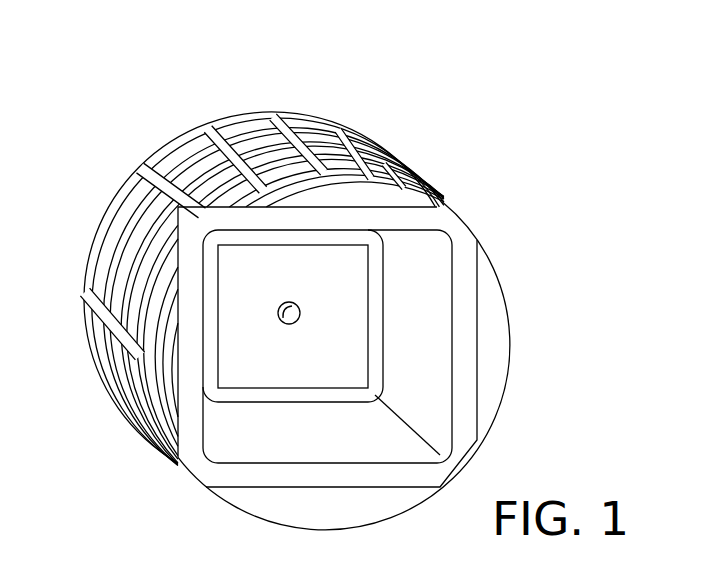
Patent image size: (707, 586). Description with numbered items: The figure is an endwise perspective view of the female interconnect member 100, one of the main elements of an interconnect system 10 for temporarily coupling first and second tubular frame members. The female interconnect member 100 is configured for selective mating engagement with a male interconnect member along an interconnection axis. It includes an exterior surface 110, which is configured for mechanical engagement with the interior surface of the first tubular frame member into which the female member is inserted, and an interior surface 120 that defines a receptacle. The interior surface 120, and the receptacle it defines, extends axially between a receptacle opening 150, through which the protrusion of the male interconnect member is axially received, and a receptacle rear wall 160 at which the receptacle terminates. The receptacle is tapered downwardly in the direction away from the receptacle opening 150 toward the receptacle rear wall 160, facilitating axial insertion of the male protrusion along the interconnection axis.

The interconnect system 10 is at (551, 67).
The female interconnect member 100 is at (462, 229).
The exterior surface 110 is at (152, 172).
The interior surface 120 is at (363, 442).
The receptacle opening 150 is at (248, 423).
The receptacle rear wall 160 is at (290, 288).